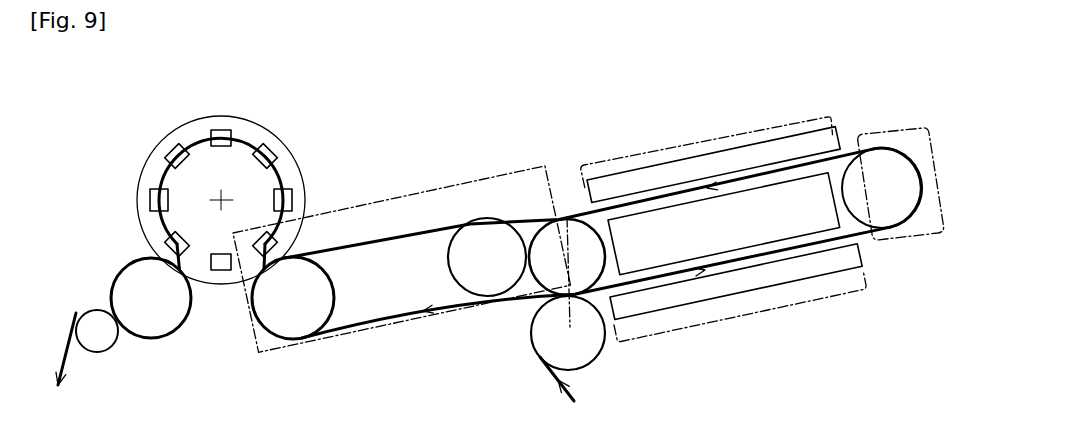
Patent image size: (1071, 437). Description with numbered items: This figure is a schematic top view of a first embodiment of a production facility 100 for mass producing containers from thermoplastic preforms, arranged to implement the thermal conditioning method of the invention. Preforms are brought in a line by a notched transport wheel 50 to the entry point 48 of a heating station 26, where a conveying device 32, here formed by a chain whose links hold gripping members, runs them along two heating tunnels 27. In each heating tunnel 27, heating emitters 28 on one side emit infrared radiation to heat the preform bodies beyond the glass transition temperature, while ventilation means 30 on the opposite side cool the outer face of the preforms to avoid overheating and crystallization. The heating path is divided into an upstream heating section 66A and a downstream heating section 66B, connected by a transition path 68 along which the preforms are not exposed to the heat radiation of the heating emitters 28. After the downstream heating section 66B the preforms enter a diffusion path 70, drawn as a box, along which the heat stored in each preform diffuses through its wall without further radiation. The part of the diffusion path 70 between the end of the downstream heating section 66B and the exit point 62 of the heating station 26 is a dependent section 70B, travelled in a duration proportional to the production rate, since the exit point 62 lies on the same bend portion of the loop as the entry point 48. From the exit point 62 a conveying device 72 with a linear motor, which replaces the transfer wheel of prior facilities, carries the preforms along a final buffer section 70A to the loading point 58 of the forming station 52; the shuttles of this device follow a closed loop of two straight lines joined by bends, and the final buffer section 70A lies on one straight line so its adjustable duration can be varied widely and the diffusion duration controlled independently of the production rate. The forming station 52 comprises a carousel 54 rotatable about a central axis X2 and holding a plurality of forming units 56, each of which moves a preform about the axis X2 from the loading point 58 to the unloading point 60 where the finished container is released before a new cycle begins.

The heating station 26 is at (884, 96).
The heating tunnel 27 is at (668, 190).
The heating emitters 28 is at (770, 152).
The ventilation means 30 is at (810, 200).
The conveying device 32 is at (913, 246).
The entry point 48 is at (570, 327).
The transport wheel 50 is at (580, 343).
The forming station 52 is at (268, 96).
The carousel 54 is at (203, 160).
The forming units 56 is at (173, 155).
The loading point 58 is at (270, 262).
The unloading point 60 is at (176, 270).
The exit point 62 is at (505, 248).
The upstream heating section 66A is at (740, 328).
The downstream heating section 66B is at (730, 137).
The transition path 68 is at (932, 145).
The diffusion path 70 is at (561, 252).
The final buffer section 70A is at (404, 338).
The dependent section 70B is at (567, 203).
The conveying device with linear motor 72 is at (375, 340).
The production facility 100 is at (492, 98).
The central axis X2 is at (225, 198).